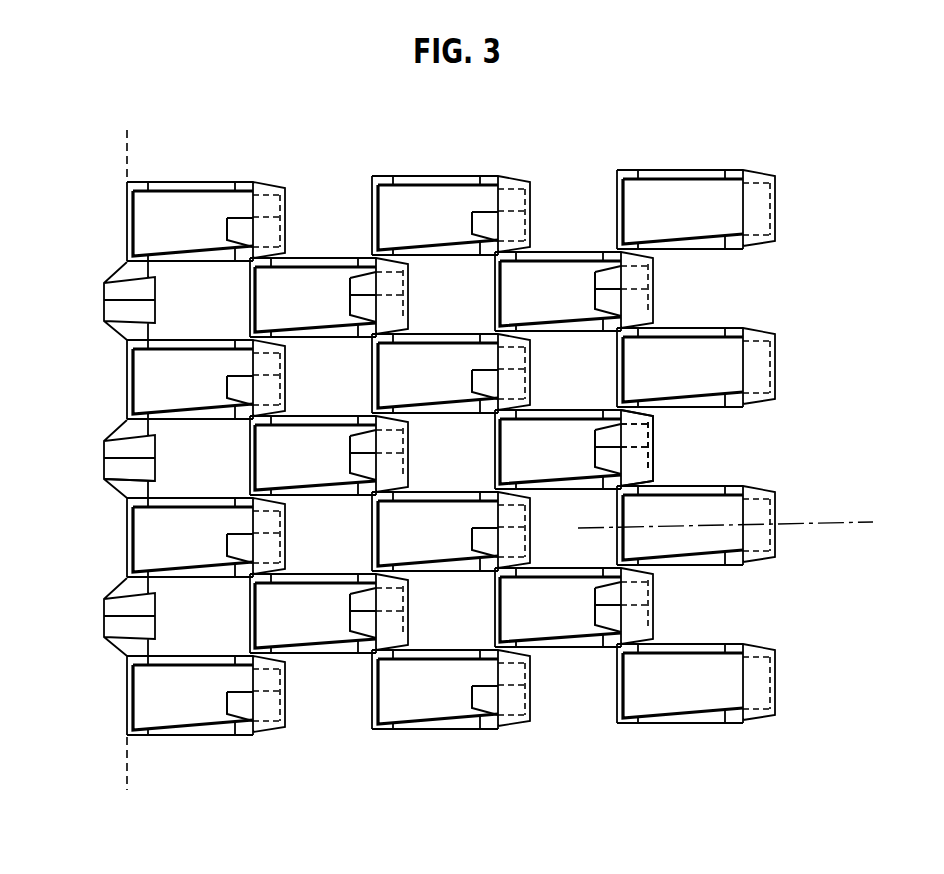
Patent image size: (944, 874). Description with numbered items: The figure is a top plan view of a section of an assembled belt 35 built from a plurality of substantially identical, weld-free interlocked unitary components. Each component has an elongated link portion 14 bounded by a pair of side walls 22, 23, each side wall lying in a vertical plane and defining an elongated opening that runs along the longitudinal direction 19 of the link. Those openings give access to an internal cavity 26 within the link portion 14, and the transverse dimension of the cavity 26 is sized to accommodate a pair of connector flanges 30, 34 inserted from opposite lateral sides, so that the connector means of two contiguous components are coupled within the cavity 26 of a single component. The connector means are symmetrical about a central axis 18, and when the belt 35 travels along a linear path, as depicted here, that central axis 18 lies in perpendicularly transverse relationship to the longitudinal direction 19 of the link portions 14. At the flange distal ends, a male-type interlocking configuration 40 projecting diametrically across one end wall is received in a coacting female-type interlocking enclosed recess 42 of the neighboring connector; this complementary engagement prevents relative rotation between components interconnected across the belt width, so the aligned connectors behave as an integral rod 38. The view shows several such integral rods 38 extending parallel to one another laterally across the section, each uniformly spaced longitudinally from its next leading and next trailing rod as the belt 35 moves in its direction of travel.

The elongated link portion 14 is at (760, 567).
The central axis 18 is at (125, 757).
The longitudinal direction 19 is at (838, 520).
The side wall 22 is at (204, 735).
The side wall 23 is at (186, 656).
The internal cavity 26 is at (190, 707).
The connector flange 30 is at (636, 460).
The connector flange 34 is at (636, 433).
The assembled belt 35 is at (106, 180).
The integral rod 38 is at (113, 496).
The male-type interlocking configuration 40 is at (108, 443).
The female-type interlocking enclosed recess 42 is at (110, 470).